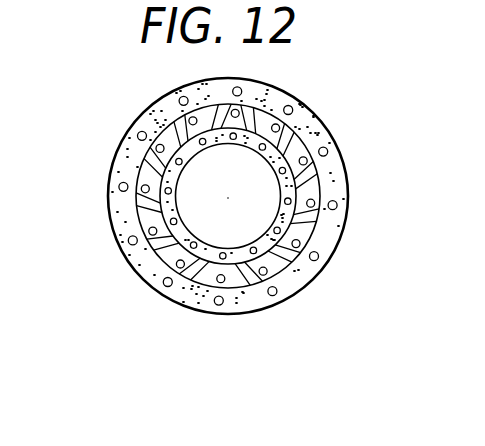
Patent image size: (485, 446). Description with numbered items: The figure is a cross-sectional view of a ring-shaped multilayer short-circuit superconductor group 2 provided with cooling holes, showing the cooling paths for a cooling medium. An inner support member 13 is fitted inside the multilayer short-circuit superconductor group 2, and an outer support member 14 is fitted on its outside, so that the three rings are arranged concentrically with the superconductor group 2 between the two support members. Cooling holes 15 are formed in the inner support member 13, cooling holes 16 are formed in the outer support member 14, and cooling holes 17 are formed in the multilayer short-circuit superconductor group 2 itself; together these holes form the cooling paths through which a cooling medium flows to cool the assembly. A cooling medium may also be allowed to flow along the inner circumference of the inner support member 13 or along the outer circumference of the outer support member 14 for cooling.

The multilayer short-circuit superconductor group 2 is at (289, 141).
The inner support member 13 is at (292, 173).
The outer support member 14 is at (330, 231).
The cooling holes 15 is at (160, 191).
The cooling holes 16 is at (132, 138).
The cooling holes 17 is at (150, 240).